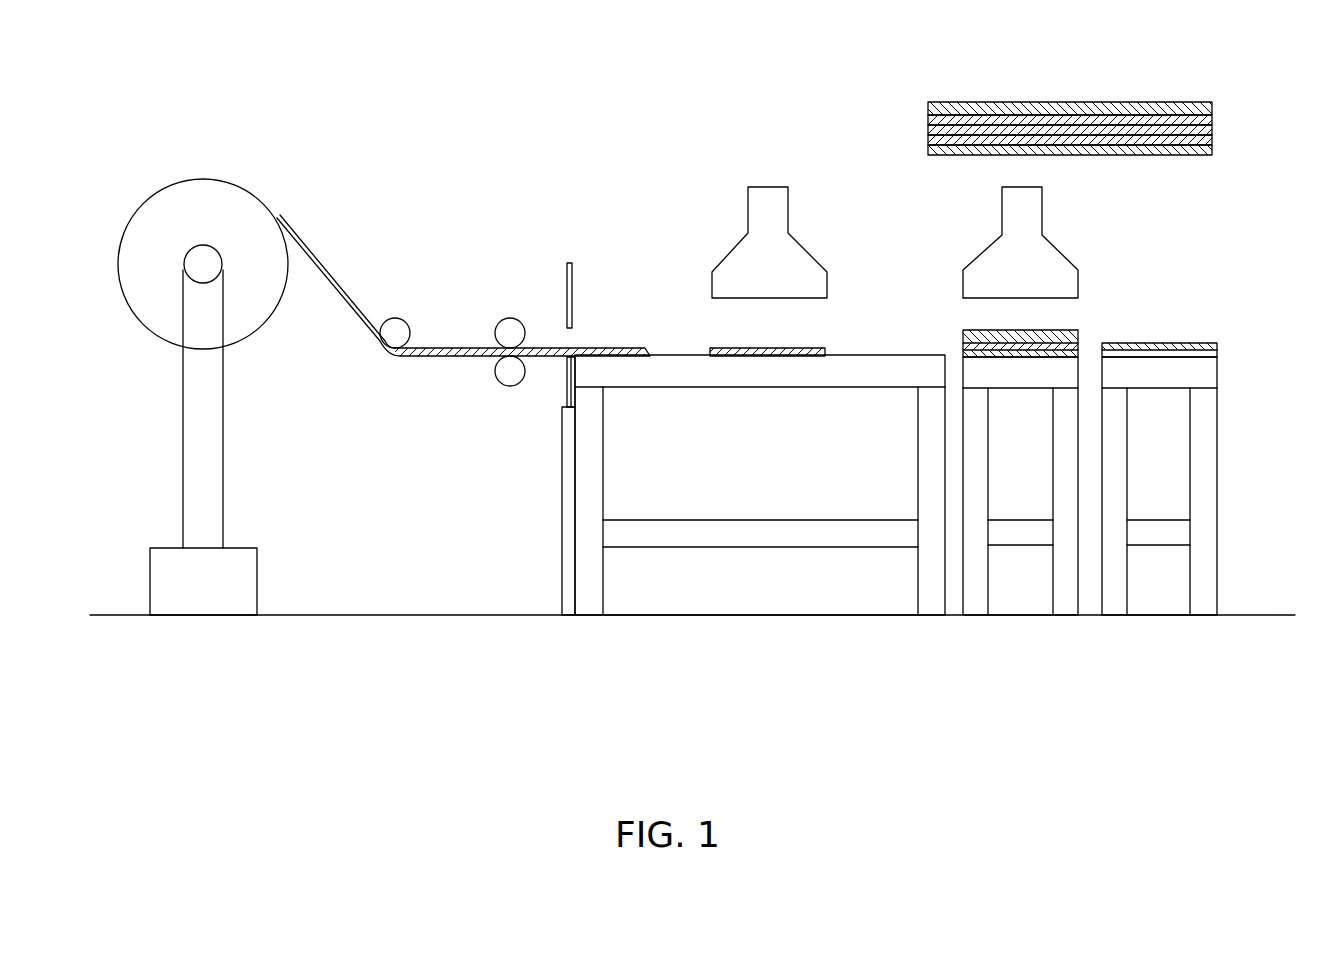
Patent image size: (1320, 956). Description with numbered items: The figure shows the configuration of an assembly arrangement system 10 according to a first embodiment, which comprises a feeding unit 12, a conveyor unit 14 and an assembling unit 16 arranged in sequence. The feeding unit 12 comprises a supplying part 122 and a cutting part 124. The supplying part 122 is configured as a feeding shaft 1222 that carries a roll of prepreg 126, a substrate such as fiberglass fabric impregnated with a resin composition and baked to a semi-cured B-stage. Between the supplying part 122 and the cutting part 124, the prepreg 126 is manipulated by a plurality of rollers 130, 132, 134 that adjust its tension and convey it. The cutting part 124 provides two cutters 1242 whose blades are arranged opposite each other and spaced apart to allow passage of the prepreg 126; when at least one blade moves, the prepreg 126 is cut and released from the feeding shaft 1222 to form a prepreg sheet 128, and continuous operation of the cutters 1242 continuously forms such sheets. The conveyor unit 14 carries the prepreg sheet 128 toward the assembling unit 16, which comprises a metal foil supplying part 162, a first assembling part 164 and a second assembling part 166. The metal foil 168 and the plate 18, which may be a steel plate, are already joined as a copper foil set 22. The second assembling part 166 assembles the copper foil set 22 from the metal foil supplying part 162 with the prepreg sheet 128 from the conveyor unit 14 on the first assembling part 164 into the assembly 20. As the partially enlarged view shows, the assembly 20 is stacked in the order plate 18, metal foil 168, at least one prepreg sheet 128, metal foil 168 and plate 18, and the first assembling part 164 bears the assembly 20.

The assembly arrangement system 10 is at (300, 69).
The feeding unit 12 is at (537, 690).
The supplying part 122 is at (265, 622).
The feeding shaft 1222 is at (197, 257).
The cutting part 124 is at (585, 622).
The cutters 1242 is at (600, 243).
The prepreg 126 is at (202, 180).
The prepreg sheet 128 is at (823, 353).
The roller 130 is at (395, 333).
The roller 132 is at (510, 334).
The roller 134 is at (508, 372).
The conveyor unit 14 is at (927, 688).
The assembling unit 16 is at (1190, 683).
The metal foil supplying part 162 is at (1220, 618).
The first assembling part 164 is at (1082, 618).
The second assembling part 166 is at (808, 255).
The metal foil 168 is at (928, 117).
The plate 18 is at (1212, 104).
The assembly 20 is at (1145, 92).
The copper foil set 22 is at (1217, 345).